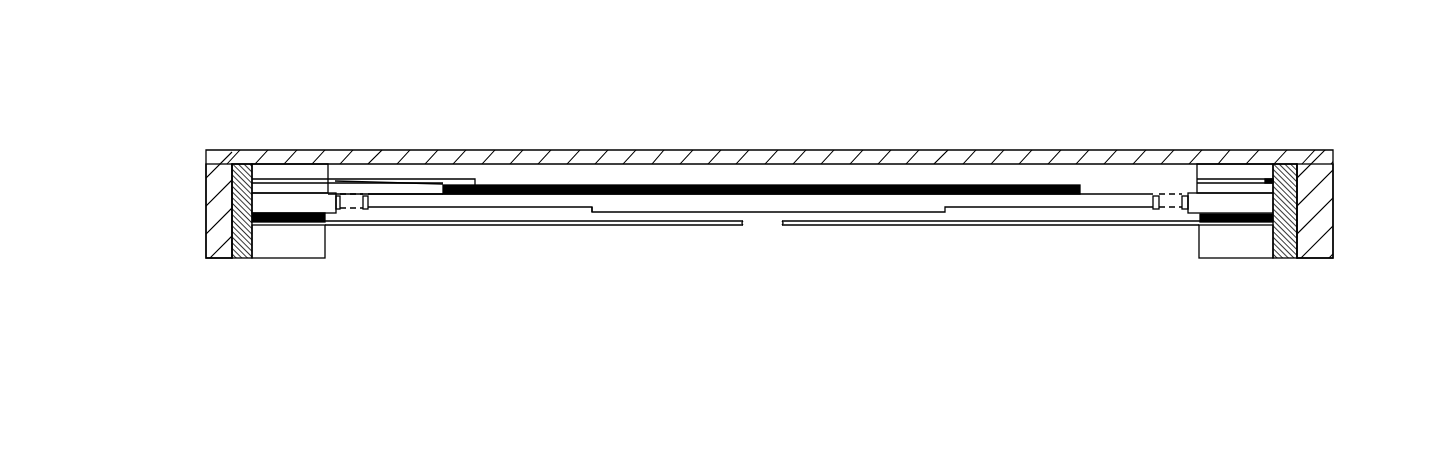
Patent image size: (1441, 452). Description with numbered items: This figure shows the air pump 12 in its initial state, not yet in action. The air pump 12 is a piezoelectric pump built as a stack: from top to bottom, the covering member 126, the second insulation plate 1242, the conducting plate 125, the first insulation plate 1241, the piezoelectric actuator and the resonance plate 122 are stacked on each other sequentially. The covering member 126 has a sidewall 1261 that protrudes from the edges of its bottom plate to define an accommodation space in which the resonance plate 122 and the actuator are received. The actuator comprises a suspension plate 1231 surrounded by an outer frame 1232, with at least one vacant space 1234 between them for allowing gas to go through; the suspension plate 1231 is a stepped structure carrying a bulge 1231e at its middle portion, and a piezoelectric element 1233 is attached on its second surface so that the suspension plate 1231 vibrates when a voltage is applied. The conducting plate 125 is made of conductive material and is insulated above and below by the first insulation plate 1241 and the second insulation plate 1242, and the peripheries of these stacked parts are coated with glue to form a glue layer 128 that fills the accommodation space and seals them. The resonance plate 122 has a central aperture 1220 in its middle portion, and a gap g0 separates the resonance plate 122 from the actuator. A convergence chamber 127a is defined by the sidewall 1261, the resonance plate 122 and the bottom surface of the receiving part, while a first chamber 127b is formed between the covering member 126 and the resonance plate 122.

The air pump 12 is at (1434, 63).
The resonance plate 122 is at (762, 282).
The central aperture 1220 is at (765, 220).
The conducting plate 125 is at (1262, 181).
The covering member 126 is at (222, 177).
The sidewall 1261 is at (217, 193).
The convergence chamber 127a is at (445, 257).
The first chamber 127b is at (628, 177).
The glue layer 128 is at (1283, 175).
The suspension plate 1231 is at (542, 205).
The bulge 1231e is at (733, 212).
The outer frame 1232 is at (265, 202).
The piezoelectric element 1233 is at (808, 185).
The vacant space 1234 is at (352, 194).
The first insulation plate 1241 is at (1308, 186).
The second insulation plate 1242 is at (1222, 177).
The gap g0 is at (1242, 225).